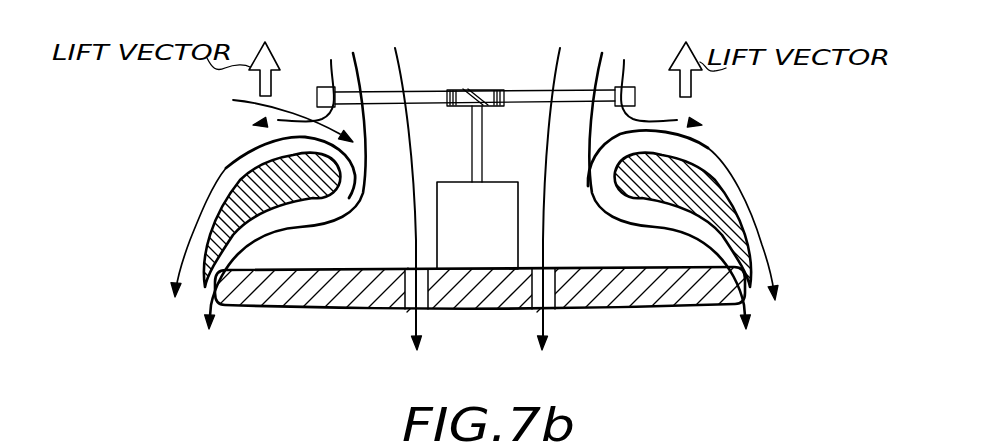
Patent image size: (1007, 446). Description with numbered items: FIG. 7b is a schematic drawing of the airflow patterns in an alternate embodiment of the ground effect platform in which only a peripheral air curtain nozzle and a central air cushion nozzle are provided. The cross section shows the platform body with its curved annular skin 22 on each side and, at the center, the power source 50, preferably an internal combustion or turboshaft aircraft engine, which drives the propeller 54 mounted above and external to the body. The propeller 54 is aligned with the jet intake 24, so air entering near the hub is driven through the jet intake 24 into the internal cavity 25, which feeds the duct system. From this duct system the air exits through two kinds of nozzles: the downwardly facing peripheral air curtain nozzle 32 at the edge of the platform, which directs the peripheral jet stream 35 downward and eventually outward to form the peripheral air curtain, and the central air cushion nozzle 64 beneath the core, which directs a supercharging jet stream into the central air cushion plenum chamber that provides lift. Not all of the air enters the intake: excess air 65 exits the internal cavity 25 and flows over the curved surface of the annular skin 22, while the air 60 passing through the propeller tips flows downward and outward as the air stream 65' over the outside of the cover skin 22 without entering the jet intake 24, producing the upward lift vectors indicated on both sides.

The annular skin 22 is at (705, 172).
The jet intake 24 is at (273, 110).
The internal cavity 25 is at (402, 221).
The peripheral air curtain nozzle 32 is at (208, 289).
The peripheral jet stream 35 is at (214, 317).
The power source 50 is at (497, 221).
The propeller 54 is at (527, 91).
The air passing through propeller tips 60 is at (254, 121).
The central air cushion nozzle 64 is at (410, 309).
The excess air 65 is at (477, 148).
The air stream over cover skin 65' is at (467, 224).